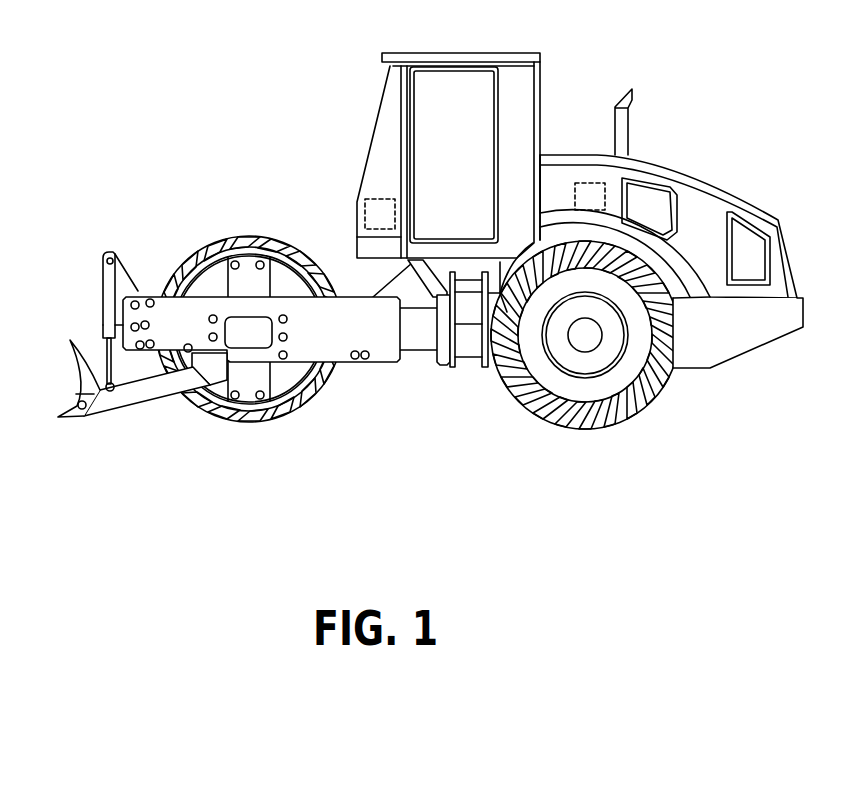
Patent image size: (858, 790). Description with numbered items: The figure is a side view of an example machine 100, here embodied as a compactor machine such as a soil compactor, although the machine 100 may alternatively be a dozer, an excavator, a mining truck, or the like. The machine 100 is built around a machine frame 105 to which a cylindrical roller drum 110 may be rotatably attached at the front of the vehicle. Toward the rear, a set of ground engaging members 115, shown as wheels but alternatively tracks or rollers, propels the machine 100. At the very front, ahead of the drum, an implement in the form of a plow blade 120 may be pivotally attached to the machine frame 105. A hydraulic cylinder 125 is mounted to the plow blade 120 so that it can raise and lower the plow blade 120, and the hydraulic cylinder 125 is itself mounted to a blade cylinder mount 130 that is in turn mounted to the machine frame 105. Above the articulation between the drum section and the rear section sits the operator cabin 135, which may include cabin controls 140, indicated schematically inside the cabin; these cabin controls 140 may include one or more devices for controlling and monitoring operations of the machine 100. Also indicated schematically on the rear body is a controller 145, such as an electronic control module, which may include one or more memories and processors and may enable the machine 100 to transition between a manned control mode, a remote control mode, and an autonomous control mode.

The machine 100 is at (193, 100).
The machine frame 105 is at (673, 168).
The cylindrical roller drum 110 is at (283, 380).
The ground engaging members 115 is at (593, 388).
The plow blade 120 is at (112, 397).
The hydraulic cylinder 125 is at (107, 354).
The blade cylinder mount 130 is at (102, 284).
The operator cabin 135 is at (461, 52).
The cabin controls 140 is at (382, 213).
The controller 145 is at (592, 195).